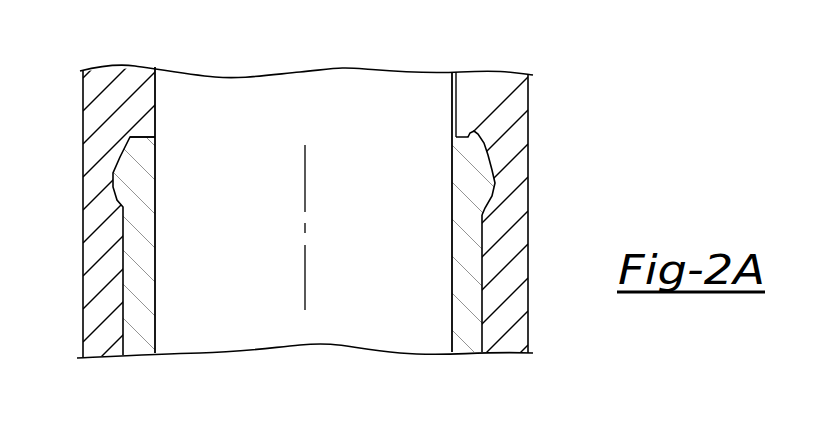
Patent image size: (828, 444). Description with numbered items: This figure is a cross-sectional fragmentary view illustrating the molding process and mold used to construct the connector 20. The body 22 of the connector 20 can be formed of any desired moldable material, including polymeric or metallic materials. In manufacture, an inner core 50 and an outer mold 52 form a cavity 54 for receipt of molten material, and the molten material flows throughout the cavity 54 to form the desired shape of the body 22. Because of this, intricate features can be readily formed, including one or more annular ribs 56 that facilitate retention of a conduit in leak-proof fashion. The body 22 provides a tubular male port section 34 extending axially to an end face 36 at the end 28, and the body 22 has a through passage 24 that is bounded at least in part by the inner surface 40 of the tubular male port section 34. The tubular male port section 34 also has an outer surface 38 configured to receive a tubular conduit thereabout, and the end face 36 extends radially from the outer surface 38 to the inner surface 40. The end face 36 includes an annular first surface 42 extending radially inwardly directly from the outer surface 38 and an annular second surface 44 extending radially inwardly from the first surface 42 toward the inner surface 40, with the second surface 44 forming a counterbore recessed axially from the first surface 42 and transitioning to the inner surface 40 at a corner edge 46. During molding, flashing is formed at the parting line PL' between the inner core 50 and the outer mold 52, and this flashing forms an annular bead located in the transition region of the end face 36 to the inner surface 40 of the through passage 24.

The connector 20 is at (497, 132).
The body 22 is at (465, 262).
The through passage 24 is at (376, 156).
The end 28 is at (472, 132).
The tubular male port section 34 is at (107, 301).
The end face 36 is at (462, 125).
The outer surface 38 is at (494, 312).
The inner surface 40 is at (440, 305).
The annular first surface 42 is at (126, 127).
The annular second surface 44 is at (142, 131).
The corner edge 46 is at (157, 143).
The inner core 50 is at (277, 107).
The outer mold 52 is at (510, 165).
The cavity 54 is at (150, 247).
The annular ribs 56 is at (495, 183).
The parting line PL' is at (303, 185).